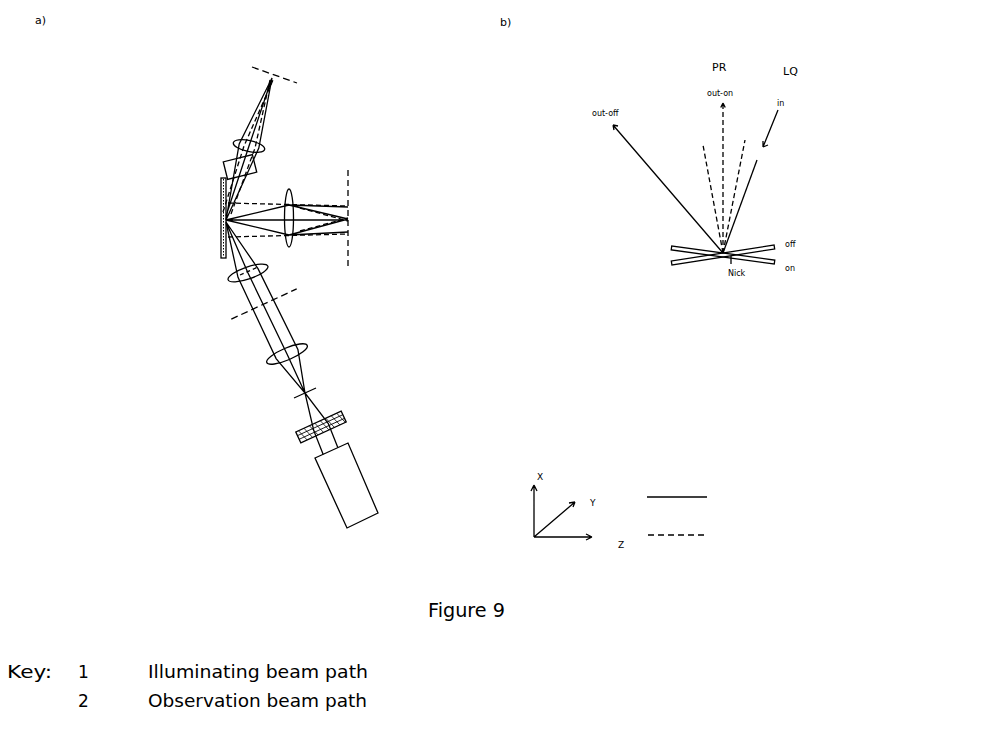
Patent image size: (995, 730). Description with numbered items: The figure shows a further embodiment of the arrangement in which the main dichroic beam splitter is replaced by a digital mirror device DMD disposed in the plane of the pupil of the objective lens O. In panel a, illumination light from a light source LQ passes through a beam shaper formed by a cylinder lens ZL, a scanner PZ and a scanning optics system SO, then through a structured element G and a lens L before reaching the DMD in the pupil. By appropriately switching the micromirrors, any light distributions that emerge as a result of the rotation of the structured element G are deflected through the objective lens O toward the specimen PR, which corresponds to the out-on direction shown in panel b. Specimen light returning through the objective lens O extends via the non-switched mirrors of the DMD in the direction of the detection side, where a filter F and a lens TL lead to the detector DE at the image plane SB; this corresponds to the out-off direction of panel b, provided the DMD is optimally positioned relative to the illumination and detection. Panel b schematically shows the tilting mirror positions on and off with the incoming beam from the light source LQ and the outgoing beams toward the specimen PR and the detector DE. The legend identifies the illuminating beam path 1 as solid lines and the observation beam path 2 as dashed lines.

The Illuminating beam path (Beleuchtungsstrahlengang) 1 is at (770, 481).
The Observation beam path (Beobachtungsstrahlengang) 2 is at (774, 551).
The digital mirror device DMD is at (183, 218).
The filter F is at (217, 160).
The lens TL is at (234, 128).
The image plane / detector SB/DE SB is at (238, 70).
The objective lens O is at (290, 209).
The specimen PR is at (351, 210).
The lens L is at (248, 281).
The structured element G is at (273, 298).
The scanning optics system SO is at (297, 351).
The scanner PZ is at (329, 374).
The beam shaper ZL is at (333, 424).
The light source LQ is at (346, 485).
The detector DE is at (647, 163).